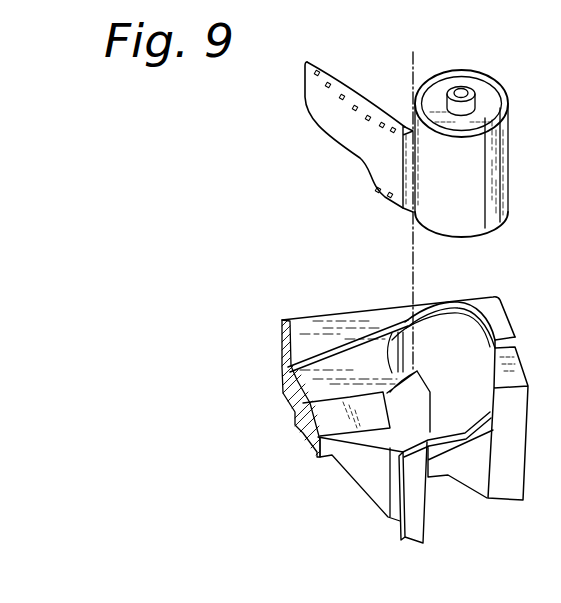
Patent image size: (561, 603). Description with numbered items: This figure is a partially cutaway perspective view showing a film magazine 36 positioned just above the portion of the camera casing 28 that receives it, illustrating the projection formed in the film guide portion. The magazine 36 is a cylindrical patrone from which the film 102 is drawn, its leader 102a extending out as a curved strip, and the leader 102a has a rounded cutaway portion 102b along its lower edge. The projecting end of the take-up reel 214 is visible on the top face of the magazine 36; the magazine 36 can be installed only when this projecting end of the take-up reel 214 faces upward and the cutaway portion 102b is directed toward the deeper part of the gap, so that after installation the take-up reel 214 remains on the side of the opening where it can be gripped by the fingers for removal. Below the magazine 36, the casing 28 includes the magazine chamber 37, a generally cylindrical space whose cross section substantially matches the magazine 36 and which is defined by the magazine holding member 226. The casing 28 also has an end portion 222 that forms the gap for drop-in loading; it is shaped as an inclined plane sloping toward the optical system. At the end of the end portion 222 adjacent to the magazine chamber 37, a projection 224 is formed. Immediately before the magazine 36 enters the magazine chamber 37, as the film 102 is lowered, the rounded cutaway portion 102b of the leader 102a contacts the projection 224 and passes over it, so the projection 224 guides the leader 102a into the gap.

The casing 28 is at (336, 314).
The magazine 36 is at (509, 147).
The magazine chamber 37 is at (458, 333).
The film 102 is at (392, 202).
The leader 102a is at (344, 90).
The cutaway portion 102b is at (360, 163).
The take-up reel 214 is at (463, 91).
The end portion 222 is at (327, 428).
The projection 224 is at (420, 377).
The magazine holding member 226 is at (416, 532).